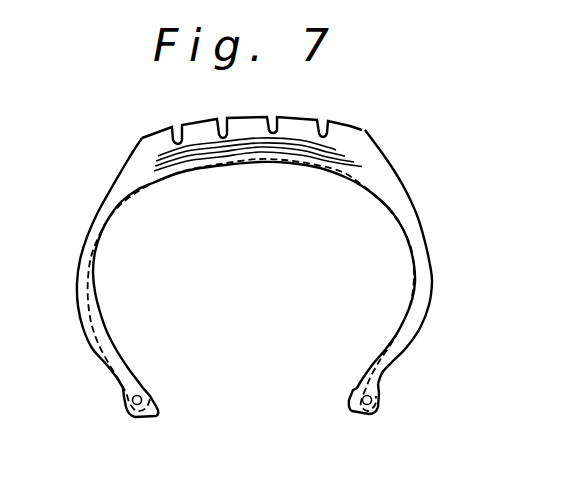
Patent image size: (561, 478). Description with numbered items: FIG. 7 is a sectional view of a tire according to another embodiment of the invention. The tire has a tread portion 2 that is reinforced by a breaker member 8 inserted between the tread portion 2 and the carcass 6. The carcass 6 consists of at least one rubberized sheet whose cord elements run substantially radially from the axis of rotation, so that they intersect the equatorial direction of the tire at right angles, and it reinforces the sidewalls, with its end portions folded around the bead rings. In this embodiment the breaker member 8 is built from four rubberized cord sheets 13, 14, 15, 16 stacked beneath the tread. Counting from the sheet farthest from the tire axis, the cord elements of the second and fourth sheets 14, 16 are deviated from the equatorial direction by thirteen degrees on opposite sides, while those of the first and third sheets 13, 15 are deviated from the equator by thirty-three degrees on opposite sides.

The tread portion 2 is at (293, 119).
The breaker member 8 is at (304, 136).
The first sheet 13 is at (345, 150).
The second sheet 14 is at (349, 158).
The third sheet 15 is at (355, 161).
The fourth sheet 16 is at (362, 166).
The carcass 6 is at (400, 207).